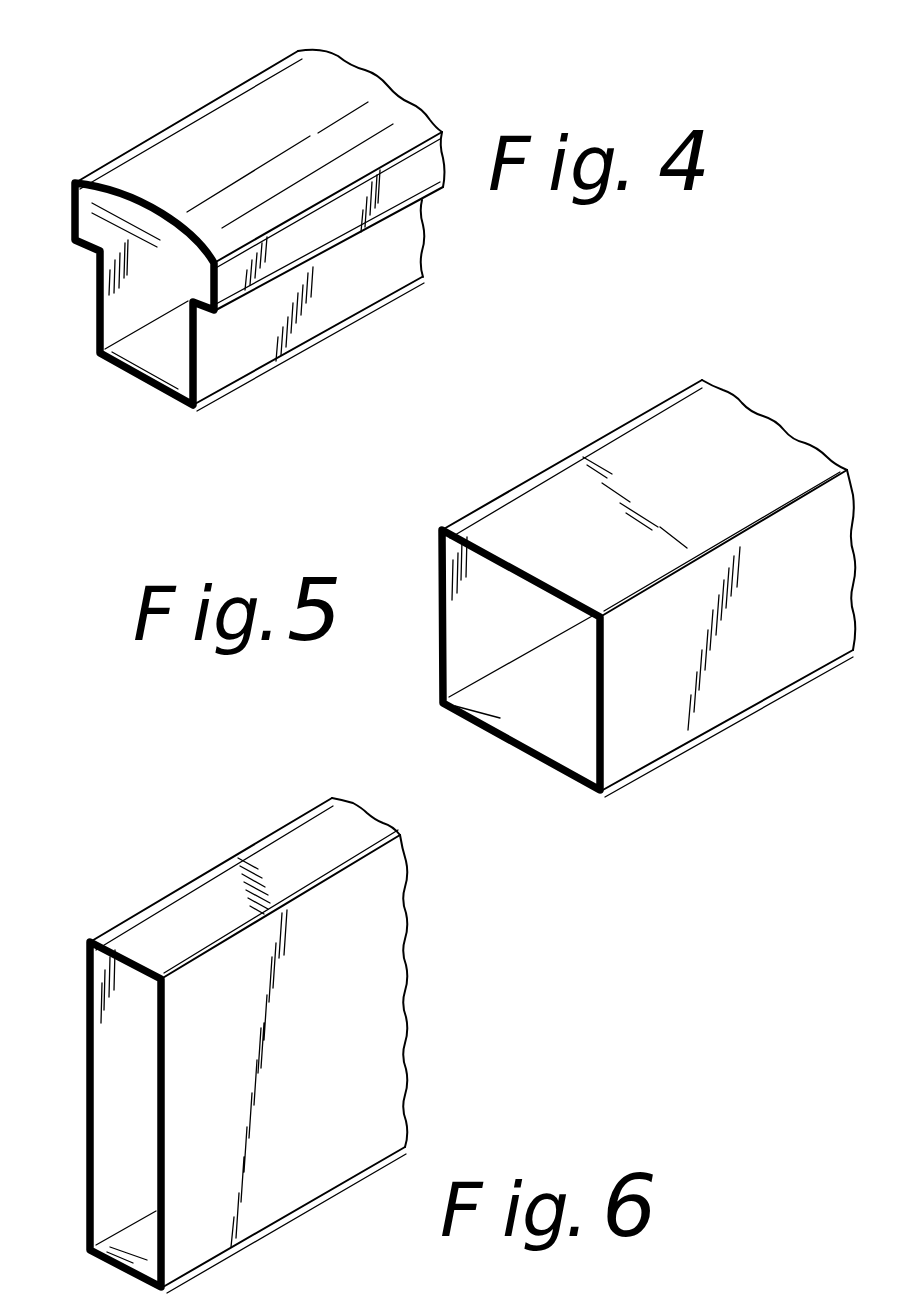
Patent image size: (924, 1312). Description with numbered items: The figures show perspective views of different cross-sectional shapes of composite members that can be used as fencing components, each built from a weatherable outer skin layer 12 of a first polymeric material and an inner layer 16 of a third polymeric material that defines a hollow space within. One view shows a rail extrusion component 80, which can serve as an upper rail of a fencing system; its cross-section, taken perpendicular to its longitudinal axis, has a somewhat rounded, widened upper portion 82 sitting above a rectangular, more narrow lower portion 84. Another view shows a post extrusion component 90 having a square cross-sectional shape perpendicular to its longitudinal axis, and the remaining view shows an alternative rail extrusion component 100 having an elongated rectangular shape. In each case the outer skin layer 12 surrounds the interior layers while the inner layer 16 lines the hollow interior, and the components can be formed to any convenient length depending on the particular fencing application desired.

In FIG. 4, the outer skin layer 12 is at (225, 125).
In FIG. 5, the outer skin layer 12 is at (733, 443).
In FIG. 6, the outer skin layer 12 is at (277, 870).
In FIG. 4, the inner layer 16 is at (100, 305).
In FIG. 5, the inner layer 16 is at (542, 727).
In FIG. 6, the inner layer 16 is at (113, 1020).
In FIG. 4, the rail extrusion component 80 is at (458, 100).
In FIG. 4, the upper portion 82 is at (305, 247).
In FIG. 4, the lower portion 84 is at (243, 355).
In FIG. 5, the post extrusion component 90 is at (540, 445).
In FIG. 6, the alternative rail extrusion component 100 is at (144, 885).